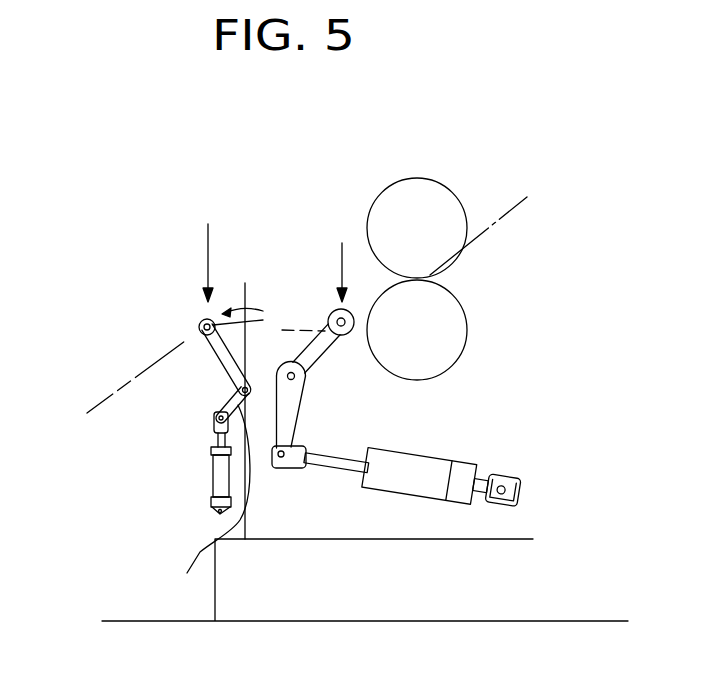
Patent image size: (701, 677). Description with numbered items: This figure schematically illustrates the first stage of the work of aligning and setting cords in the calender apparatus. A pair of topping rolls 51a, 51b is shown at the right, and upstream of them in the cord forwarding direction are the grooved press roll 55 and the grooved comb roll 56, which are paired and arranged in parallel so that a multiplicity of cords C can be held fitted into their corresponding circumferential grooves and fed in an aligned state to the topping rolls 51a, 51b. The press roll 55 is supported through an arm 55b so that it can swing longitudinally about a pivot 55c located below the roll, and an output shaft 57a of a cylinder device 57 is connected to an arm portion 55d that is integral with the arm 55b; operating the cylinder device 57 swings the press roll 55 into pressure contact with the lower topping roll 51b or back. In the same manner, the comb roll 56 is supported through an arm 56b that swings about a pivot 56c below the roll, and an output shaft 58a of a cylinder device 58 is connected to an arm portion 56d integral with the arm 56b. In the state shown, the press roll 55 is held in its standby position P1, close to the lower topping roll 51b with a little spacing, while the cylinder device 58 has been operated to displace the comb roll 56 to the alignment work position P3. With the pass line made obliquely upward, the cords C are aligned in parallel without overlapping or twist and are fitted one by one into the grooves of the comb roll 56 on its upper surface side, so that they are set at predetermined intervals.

The topping roll 51a is at (453, 205).
The topping roll 51b is at (455, 323).
The press roll 55 is at (327, 307).
The arm 55b is at (325, 348).
The pivot 55c is at (297, 380).
The arm portion 55d is at (315, 464).
The comb roll 56 is at (200, 322).
The arm 56b is at (220, 357).
The pivot 56c is at (235, 392).
The arm portion 56d is at (191, 508).
The cylinder device 57 is at (432, 493).
The output shaft 57a is at (338, 468).
The cylinder device 58 is at (212, 478).
The output shaft 58a is at (214, 428).
The cords C is at (100, 392).
The standby position P1 is at (343, 254).
The alignment work position P3 is at (209, 244).